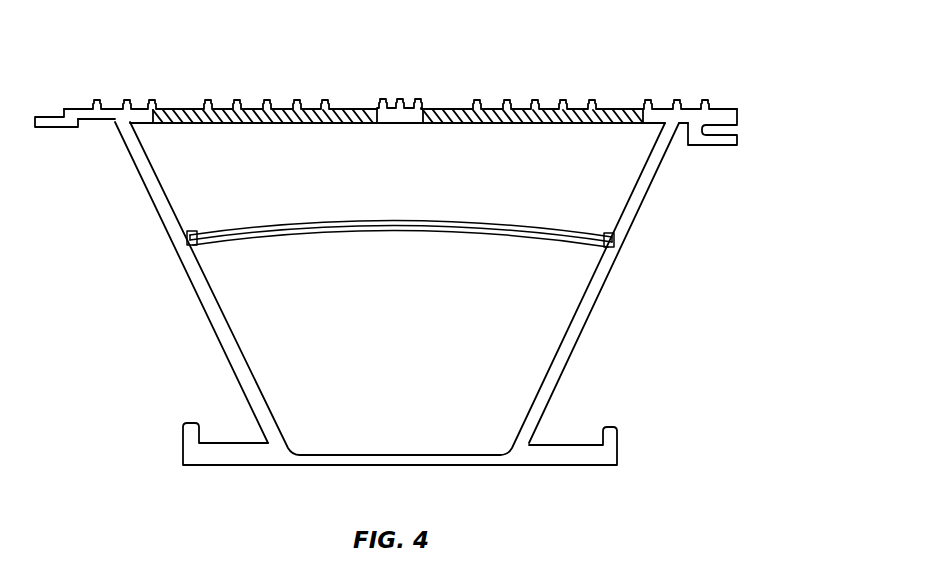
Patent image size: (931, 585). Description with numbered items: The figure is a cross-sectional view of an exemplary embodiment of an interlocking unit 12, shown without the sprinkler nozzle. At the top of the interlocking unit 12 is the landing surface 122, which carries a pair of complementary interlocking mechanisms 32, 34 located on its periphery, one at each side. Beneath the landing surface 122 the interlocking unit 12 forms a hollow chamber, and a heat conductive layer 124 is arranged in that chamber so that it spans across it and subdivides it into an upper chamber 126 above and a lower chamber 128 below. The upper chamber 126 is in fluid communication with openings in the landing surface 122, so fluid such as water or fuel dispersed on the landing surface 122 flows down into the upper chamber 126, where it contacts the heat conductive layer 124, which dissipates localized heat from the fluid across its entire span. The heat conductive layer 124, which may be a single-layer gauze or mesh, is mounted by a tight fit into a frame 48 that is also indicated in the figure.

The interlocking unit 12 is at (597, 297).
The interlocking mechanism 32 is at (50, 129).
The interlocking mechanism 34 is at (707, 143).
The frame 48 is at (207, 247).
The landing surface 122 is at (185, 108).
The heat conductive layer 124 is at (407, 219).
The upper chamber 126 is at (195, 215).
The lower chamber 128 is at (472, 440).